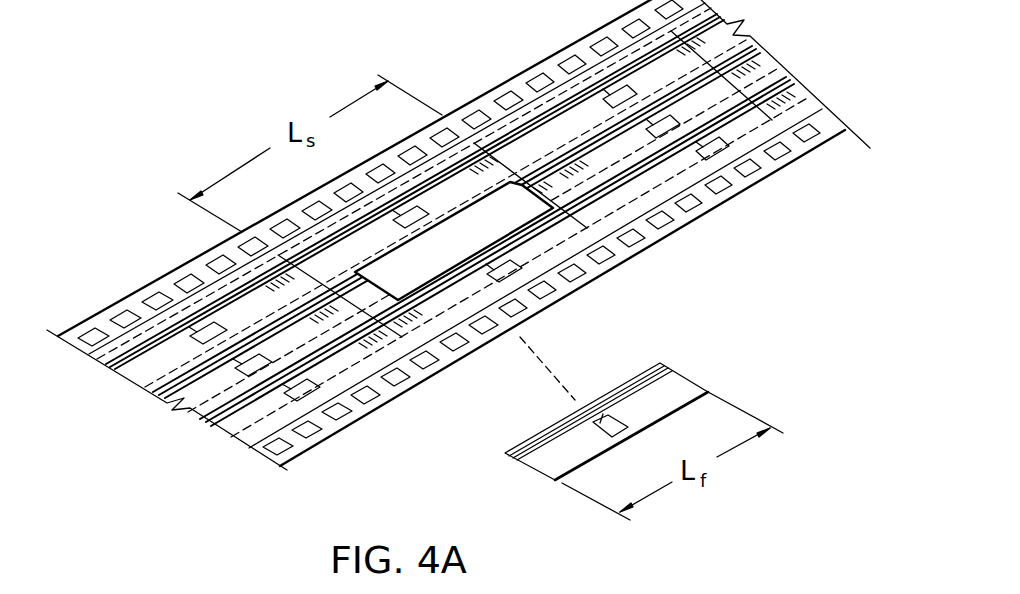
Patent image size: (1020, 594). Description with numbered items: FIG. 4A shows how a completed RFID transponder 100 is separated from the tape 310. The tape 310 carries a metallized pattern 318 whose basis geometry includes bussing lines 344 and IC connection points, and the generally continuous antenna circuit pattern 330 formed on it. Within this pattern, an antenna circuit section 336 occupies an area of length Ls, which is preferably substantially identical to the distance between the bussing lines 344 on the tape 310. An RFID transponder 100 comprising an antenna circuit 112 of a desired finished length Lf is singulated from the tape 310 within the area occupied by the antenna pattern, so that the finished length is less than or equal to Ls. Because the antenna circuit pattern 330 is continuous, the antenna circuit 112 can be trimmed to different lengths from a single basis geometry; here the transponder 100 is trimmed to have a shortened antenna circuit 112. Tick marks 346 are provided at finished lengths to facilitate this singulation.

The tape 310 is at (142, 376).
The metallized pattern 318 is at (134, 308).
The antenna circuit section 336 is at (467, 157).
The antenna circuit pattern 330 is at (735, 125).
The bussing lines 344 is at (418, 337).
The tick marks 346 is at (378, 335).
The RFID transponder 100 is at (672, 393).
The antenna circuit 112 is at (537, 448).